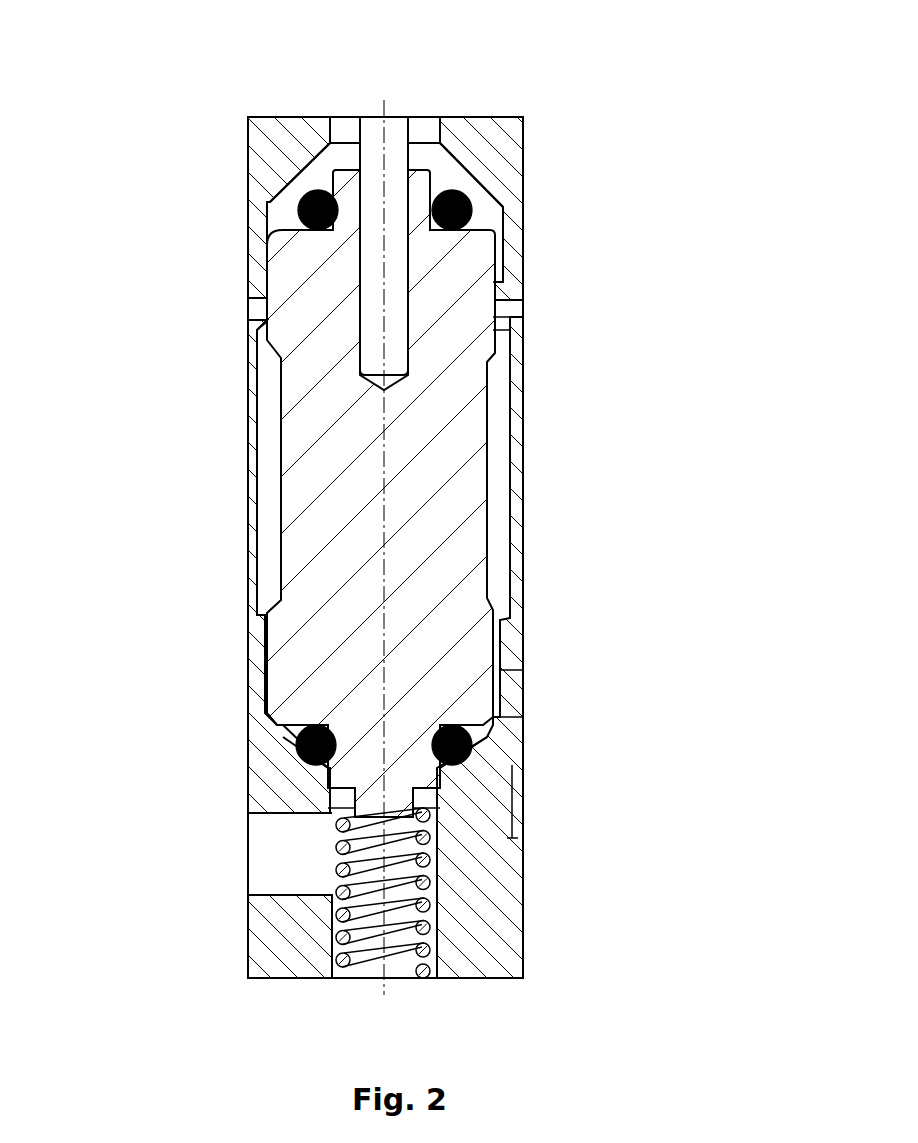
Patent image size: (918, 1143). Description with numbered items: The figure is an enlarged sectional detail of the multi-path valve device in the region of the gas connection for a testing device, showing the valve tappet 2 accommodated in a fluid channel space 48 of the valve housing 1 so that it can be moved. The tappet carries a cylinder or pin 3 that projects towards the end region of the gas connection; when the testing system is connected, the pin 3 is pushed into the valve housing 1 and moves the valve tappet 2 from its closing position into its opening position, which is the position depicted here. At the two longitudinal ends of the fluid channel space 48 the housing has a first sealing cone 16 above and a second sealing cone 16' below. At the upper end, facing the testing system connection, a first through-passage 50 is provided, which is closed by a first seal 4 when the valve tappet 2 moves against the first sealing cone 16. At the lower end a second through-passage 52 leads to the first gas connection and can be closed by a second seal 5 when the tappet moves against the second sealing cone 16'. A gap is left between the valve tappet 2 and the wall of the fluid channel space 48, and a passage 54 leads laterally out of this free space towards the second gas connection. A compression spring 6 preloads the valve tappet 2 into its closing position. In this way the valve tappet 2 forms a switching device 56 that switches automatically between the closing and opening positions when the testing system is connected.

The valve housing 1 is at (457, 130).
The valve tappet 2 is at (452, 473).
The cylinder or pin 3 is at (378, 160).
The first seal 4 is at (475, 192).
The second seal 5 is at (472, 730).
The compression spring 6 is at (438, 822).
The first sealing cone 16 is at (393, 143).
The second sealing cone 16' is at (307, 759).
The fluid channel space 48 is at (263, 403).
The first through-passage 50 is at (428, 137).
The second through-passage 52 is at (322, 843).
The passage 54 is at (520, 680).
The switching device 56 is at (223, 485).